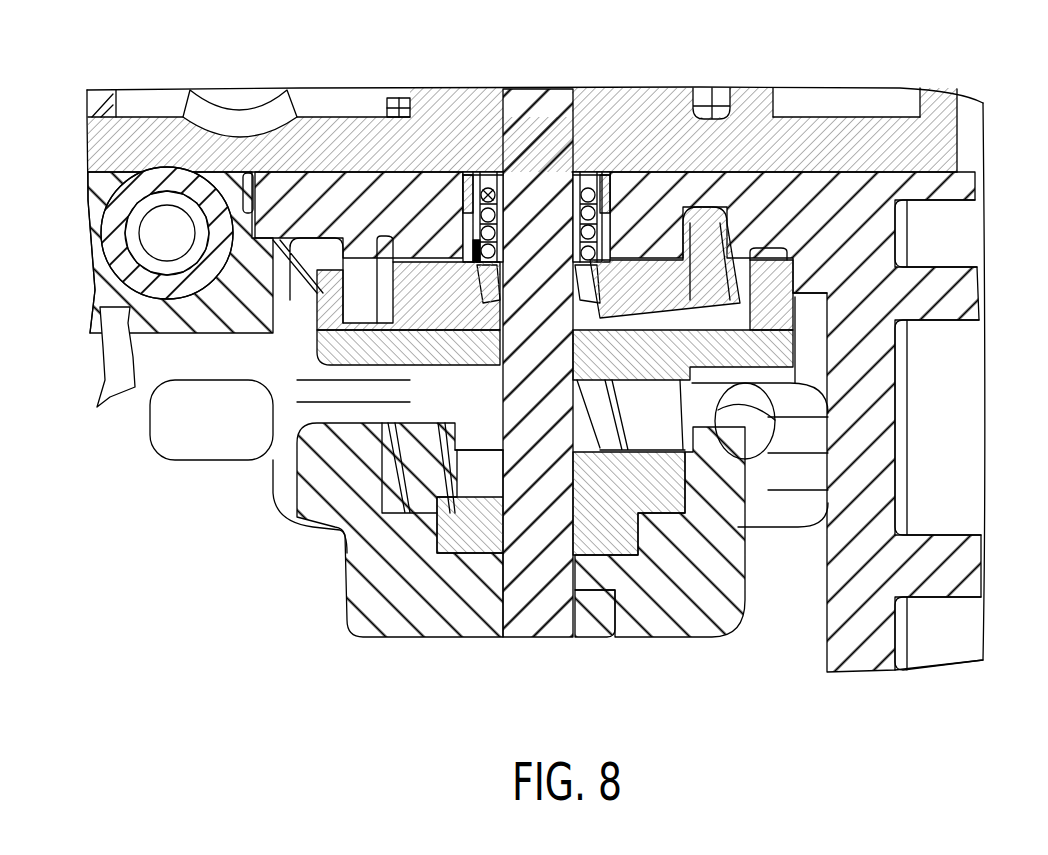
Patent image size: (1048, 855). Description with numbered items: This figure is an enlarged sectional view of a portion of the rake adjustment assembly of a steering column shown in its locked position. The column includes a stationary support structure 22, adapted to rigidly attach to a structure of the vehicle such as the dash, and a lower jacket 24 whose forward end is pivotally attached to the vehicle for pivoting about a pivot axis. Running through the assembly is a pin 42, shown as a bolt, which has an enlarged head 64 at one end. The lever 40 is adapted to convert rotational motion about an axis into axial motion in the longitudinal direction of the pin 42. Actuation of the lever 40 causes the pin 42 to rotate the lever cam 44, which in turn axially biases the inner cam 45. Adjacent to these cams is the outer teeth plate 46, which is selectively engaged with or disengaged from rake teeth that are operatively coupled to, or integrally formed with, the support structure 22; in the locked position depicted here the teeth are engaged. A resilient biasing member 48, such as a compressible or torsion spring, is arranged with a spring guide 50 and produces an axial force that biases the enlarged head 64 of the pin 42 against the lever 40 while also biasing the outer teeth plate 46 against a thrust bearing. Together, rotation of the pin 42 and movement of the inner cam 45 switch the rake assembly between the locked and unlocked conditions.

The support structure 22 is at (957, 190).
The lower jacket 24 is at (150, 113).
The lever 40 is at (700, 613).
The pin 42 is at (540, 107).
The lever cam 44 is at (467, 530).
The inner cam 45 is at (448, 415).
The outer teeth plate 46 is at (708, 253).
The resilient biasing member 48 is at (590, 177).
The spring guide 50 is at (487, 177).
The enlarged head 64 is at (590, 617).